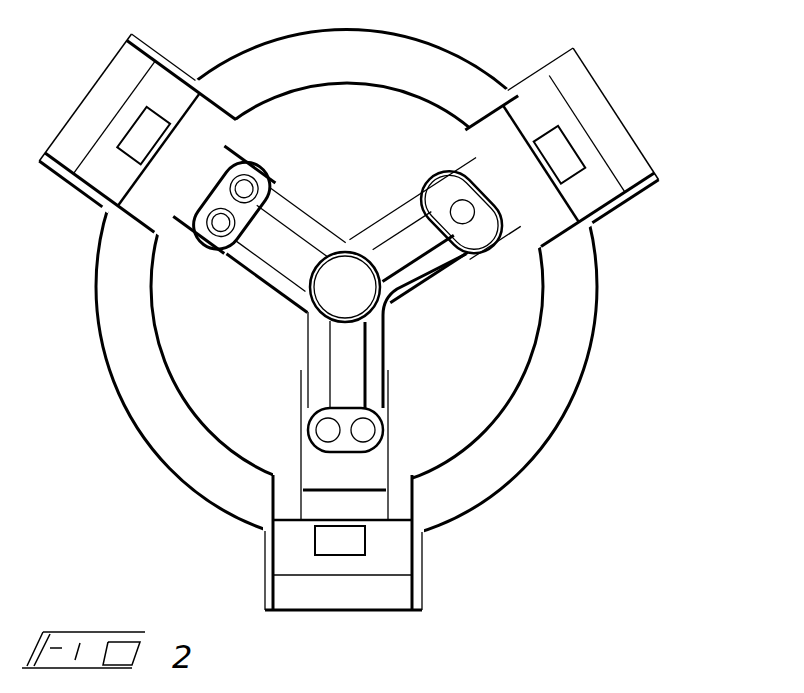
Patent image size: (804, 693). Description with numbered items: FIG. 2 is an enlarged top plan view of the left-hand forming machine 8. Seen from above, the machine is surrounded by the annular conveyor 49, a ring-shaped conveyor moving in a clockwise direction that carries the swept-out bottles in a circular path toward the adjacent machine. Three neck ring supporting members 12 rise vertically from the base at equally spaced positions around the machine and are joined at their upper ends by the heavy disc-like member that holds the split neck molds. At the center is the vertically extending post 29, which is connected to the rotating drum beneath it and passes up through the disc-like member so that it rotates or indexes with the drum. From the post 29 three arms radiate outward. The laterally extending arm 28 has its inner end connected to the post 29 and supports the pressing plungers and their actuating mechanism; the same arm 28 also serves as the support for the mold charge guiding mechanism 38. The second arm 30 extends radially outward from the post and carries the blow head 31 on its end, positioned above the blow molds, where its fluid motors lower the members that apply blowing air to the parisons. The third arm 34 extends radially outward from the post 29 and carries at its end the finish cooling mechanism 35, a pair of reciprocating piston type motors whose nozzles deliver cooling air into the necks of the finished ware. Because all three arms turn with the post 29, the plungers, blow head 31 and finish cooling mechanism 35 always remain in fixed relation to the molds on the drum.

The forming machine 8 is at (349, 336).
The neck ring supporting member 12 is at (97, 104).
The laterally extending arm 28 is at (300, 194).
The vertically extending post 29 is at (364, 300).
The second arm 30 is at (385, 232).
The blow head 31 is at (477, 235).
The third arm 34 is at (371, 366).
The finish cooling mechanism 35 is at (305, 427).
The mold charge guiding mechanism 38 is at (218, 240).
The annular conveyor 49 is at (134, 377).